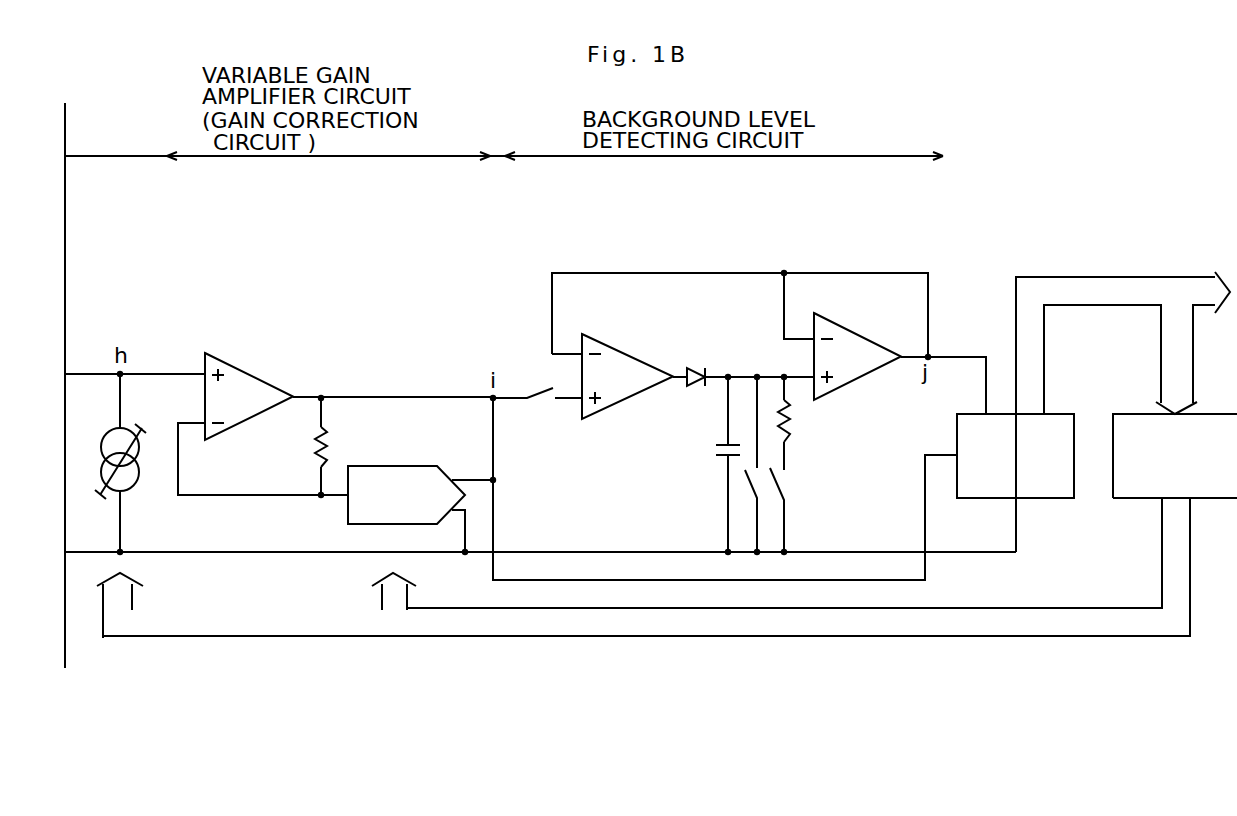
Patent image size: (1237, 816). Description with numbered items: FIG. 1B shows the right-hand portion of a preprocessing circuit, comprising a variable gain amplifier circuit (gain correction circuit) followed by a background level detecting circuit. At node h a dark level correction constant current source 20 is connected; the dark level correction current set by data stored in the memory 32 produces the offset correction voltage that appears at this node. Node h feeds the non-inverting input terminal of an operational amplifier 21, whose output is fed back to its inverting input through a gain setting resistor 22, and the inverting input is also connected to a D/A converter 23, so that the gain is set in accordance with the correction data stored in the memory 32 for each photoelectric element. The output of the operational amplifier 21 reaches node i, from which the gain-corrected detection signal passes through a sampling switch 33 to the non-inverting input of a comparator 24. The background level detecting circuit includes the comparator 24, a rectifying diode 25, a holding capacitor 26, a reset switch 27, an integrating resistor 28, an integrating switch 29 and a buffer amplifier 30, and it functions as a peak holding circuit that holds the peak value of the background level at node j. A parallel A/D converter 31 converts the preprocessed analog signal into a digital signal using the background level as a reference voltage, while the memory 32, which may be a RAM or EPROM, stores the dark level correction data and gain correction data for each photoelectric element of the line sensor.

The dark level correction constant current source 20 is at (131, 489).
The operational amplifier 21 is at (260, 378).
The gain setting resistor 22 is at (329, 431).
The D/A converter 23 is at (434, 466).
The comparator 24 is at (632, 357).
The rectifying diode 25 is at (697, 367).
The holding capacitor 26 is at (716, 451).
The reset switch 27 is at (744, 490).
The integrating resistor 28 is at (788, 428).
The integrating switch 29 is at (786, 481).
The buffer amplifier 30 is at (876, 343).
The parallel A/D converter 31 is at (1047, 499).
The memory 32 is at (1133, 499).
The sampling switch 33 is at (547, 402).